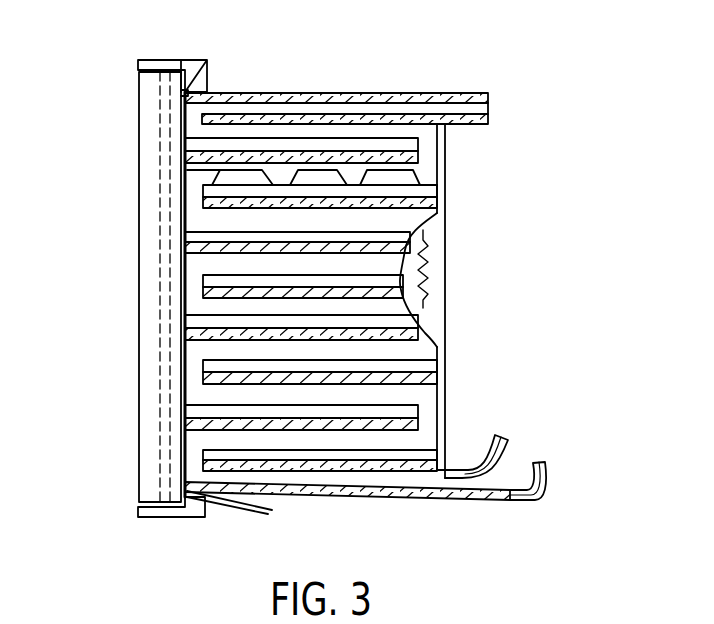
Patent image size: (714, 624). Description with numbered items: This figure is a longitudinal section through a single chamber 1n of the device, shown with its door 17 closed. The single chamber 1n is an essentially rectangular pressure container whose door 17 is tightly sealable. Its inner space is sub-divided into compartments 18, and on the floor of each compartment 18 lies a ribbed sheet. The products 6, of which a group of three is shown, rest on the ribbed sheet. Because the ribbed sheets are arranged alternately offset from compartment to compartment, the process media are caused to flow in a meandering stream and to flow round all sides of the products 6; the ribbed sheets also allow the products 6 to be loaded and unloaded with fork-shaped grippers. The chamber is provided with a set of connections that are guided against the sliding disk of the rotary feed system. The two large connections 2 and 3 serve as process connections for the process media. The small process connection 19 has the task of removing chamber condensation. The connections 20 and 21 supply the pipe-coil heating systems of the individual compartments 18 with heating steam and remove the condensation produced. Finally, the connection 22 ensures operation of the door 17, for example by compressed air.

The single chamber 1n is at (372, 95).
The process connection 2 is at (482, 108).
The process connection 3 is at (505, 442).
The products 6 is at (221, 177).
The door 17 is at (147, 222).
The compartments 18 is at (223, 345).
The small process connection 19 is at (538, 460).
The heating connection 20 is at (423, 230).
The condensation connection 21 is at (423, 308).
The door operation connection 22 is at (272, 512).